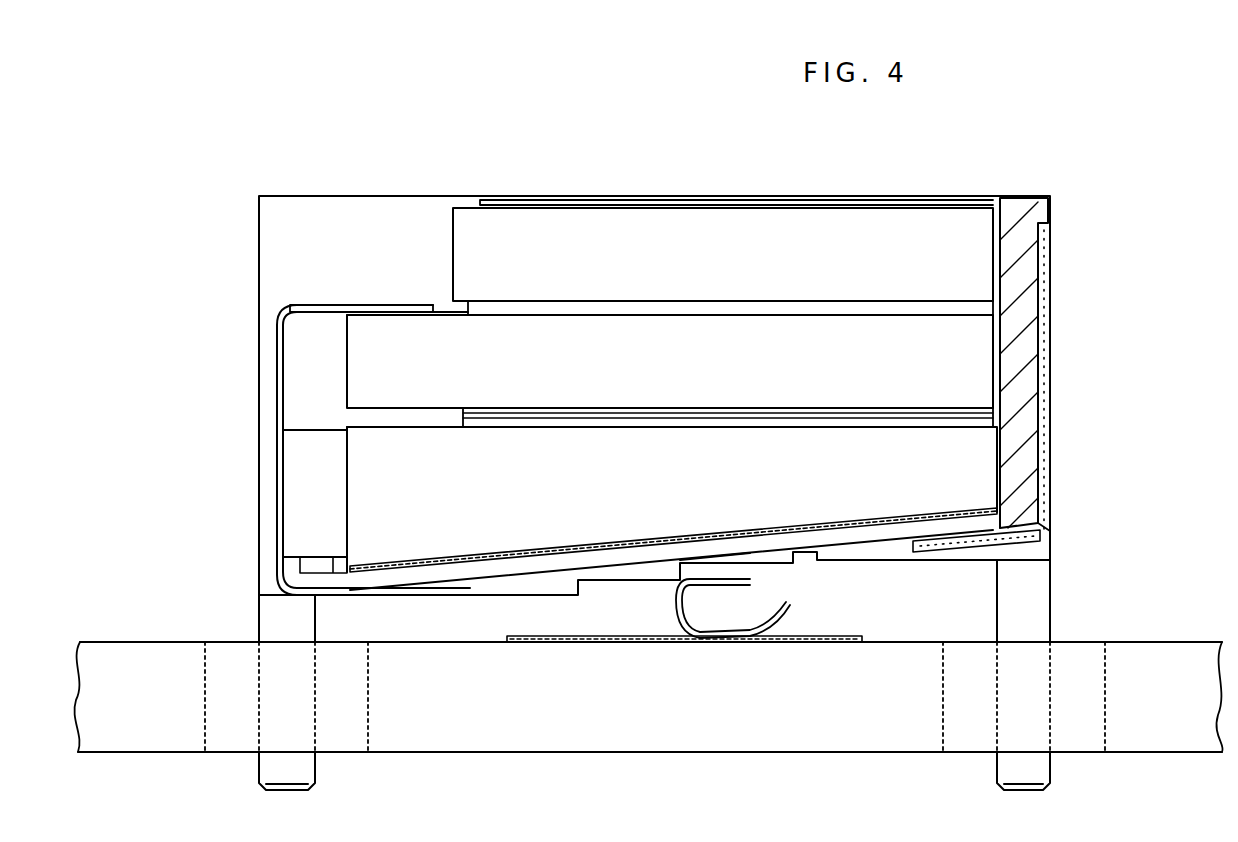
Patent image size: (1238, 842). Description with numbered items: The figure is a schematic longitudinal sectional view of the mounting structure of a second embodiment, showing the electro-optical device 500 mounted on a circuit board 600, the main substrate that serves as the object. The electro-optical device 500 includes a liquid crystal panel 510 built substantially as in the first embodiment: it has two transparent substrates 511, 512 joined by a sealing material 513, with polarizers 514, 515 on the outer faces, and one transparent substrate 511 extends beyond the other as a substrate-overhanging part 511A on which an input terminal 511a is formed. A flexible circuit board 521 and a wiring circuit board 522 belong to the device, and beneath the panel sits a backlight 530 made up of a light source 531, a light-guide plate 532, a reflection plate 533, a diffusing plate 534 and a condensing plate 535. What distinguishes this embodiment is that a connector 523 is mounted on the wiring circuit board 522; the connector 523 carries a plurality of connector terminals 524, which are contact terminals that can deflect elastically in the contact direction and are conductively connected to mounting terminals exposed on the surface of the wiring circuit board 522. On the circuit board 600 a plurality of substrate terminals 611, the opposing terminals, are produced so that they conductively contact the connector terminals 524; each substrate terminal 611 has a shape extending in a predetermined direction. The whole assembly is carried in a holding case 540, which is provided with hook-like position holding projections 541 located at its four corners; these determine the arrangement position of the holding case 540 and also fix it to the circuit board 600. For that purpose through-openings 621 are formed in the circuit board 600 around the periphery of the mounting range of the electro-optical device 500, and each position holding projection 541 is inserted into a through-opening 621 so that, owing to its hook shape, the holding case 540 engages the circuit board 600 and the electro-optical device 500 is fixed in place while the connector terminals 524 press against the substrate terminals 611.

The electro-optical device 500 is at (717, 115).
The liquid crystal panel 510 is at (670, 310).
The transparent substrate 511 is at (483, 388).
The input terminal 511a is at (380, 318).
The substrate-overhanging part 511A is at (347, 368).
The transparent substrate 512 is at (473, 240).
The sealing material 513 is at (715, 300).
The polarizer 514 is at (702, 408).
The polarizer 515 is at (742, 203).
The flexible circuit board 521 is at (410, 305).
The wiring circuit board 522 is at (832, 548).
The connector 523 is at (712, 572).
The connector terminal 524 is at (752, 640).
The backlight 530 is at (605, 518).
The light source 531 is at (300, 500).
The light-guide plate 532 is at (885, 485).
The reflection plate 533 is at (636, 545).
The diffusing plate 534 is at (738, 428).
The condensing plate 535 is at (780, 422).
The holding case 540 is at (1018, 210).
The position holding projection 541 is at (312, 622).
The circuit board 600 is at (110, 643).
The substrate terminal 611 is at (605, 645).
The through-opening 621 is at (215, 660).